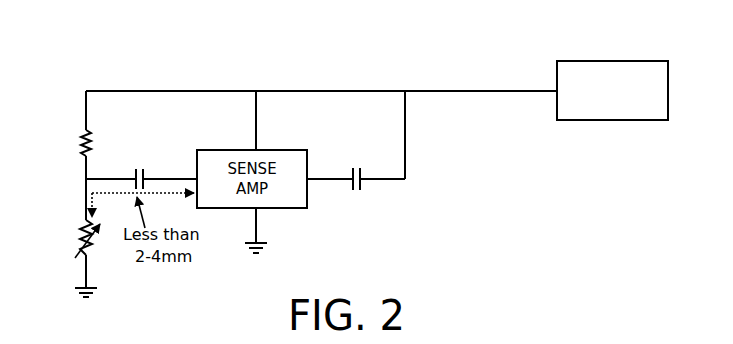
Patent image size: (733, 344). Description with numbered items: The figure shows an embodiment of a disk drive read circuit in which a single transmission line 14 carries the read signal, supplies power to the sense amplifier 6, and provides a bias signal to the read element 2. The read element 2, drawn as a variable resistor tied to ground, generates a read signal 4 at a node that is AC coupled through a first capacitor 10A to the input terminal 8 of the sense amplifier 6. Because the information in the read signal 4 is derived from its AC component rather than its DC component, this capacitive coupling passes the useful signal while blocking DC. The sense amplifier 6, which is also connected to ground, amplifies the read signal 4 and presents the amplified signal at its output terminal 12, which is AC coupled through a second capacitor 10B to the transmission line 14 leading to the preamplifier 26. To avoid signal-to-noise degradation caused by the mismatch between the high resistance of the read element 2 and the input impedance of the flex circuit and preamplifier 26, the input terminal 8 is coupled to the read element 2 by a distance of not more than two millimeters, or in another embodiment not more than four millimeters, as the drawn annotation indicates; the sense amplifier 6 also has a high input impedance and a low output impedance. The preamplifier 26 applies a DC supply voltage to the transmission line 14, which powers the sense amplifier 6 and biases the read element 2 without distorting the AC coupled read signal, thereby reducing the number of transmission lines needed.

The read element 2 is at (72, 233).
The read signal 4 is at (85, 183).
The sense amplifier 6 is at (292, 211).
The input terminal 8 is at (172, 178).
The first capacitor 10A is at (138, 165).
The second capacitor 10B is at (357, 164).
The output terminal 12 is at (324, 178).
The transmission line 14 is at (480, 89).
The preamplifier 26 is at (610, 60).